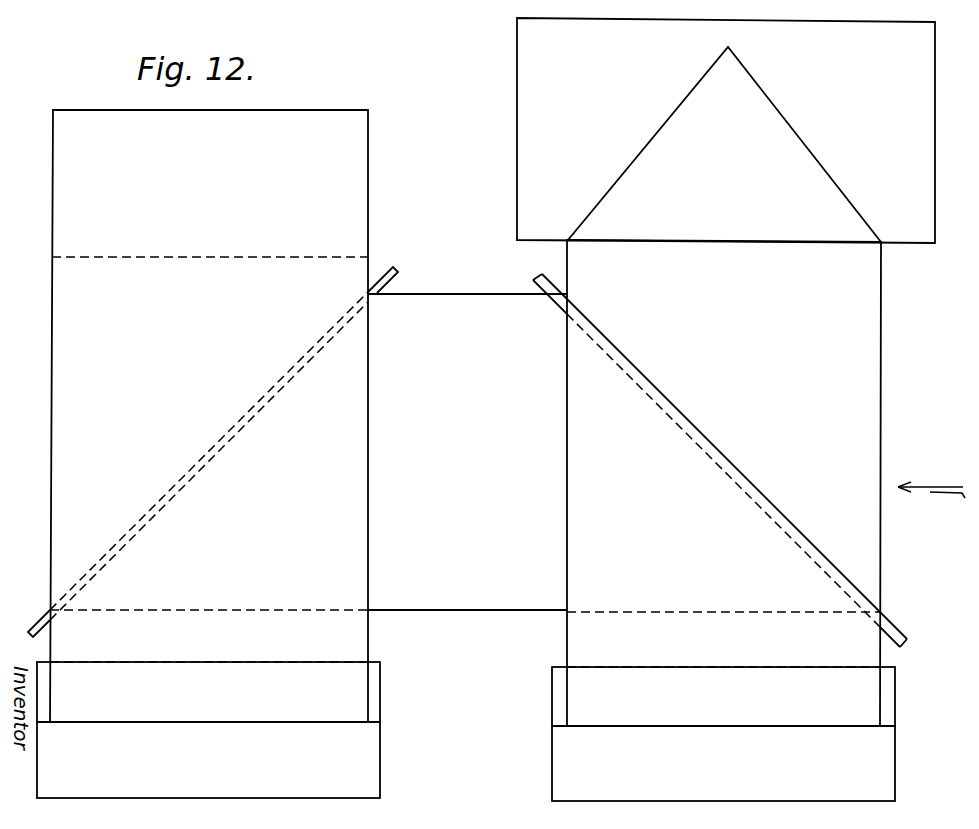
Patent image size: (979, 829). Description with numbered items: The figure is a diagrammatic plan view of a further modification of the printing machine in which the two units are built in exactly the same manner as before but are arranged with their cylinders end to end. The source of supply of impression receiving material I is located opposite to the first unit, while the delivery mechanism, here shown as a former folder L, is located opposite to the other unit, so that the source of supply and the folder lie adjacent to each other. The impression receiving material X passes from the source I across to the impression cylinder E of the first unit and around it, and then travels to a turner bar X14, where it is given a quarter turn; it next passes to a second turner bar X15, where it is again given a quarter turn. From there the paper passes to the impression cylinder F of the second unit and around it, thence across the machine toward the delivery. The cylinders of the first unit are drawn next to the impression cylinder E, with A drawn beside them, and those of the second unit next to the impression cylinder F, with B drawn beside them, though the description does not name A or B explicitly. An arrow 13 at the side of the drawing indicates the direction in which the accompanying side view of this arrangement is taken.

The source of supply of impression receiving material I is at (330, 110).
The impression receiving material X is at (434, 294).
The turner bar X14 is at (203, 450).
The turner bar X15 is at (750, 483).
The former folder L is at (812, 149).
The impression cylinder E is at (380, 689).
The left bottom panel A is at (380, 760).
The impression cylinder F is at (551, 693).
The right bottom panel B is at (552, 757).
The arrow 13 is at (931, 476).